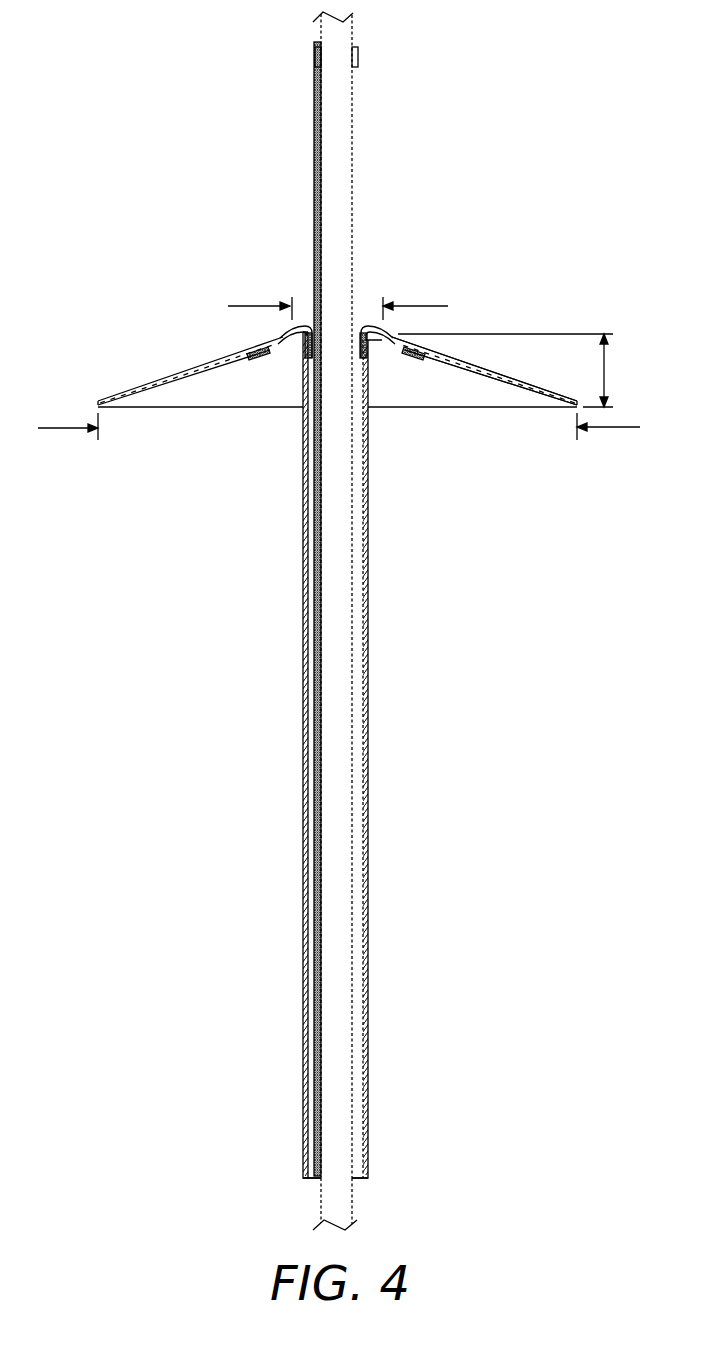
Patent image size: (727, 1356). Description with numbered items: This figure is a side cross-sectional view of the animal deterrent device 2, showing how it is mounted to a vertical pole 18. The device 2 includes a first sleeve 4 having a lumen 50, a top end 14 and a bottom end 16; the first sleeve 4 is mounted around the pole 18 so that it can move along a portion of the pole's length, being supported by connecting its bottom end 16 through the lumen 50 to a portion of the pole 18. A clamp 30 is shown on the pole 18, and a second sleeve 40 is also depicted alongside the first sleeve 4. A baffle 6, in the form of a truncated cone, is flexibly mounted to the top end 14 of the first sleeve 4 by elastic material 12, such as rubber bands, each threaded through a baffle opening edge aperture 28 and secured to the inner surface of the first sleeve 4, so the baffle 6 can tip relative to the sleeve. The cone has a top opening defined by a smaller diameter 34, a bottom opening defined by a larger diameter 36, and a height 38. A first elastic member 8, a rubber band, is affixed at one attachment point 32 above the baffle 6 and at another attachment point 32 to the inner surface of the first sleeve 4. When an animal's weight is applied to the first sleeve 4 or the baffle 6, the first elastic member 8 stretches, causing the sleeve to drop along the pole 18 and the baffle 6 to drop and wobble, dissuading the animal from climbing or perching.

The animal deterrent device 2 is at (410, 773).
The first sleeve 4 is at (304, 706).
The baffle 6 is at (511, 383).
The first elastic member 8 is at (316, 537).
The elastic material 12 is at (298, 326).
The top end of first sleeve 14 is at (286, 283).
The bottom end of first sleeve 16 is at (397, 1166).
The pole 18 is at (354, 1196).
The baffle opening edge aperture 28 is at (275, 339).
The clamp 30 is at (357, 58).
The attachment point 32 is at (313, 56).
The smaller diameter 34 is at (424, 305).
The larger diameter 36 is at (618, 429).
The height of baffle 38 is at (605, 366).
The second sleeve 40 is at (304, 920).
The lumen of first sleeve 50 is at (361, 520).